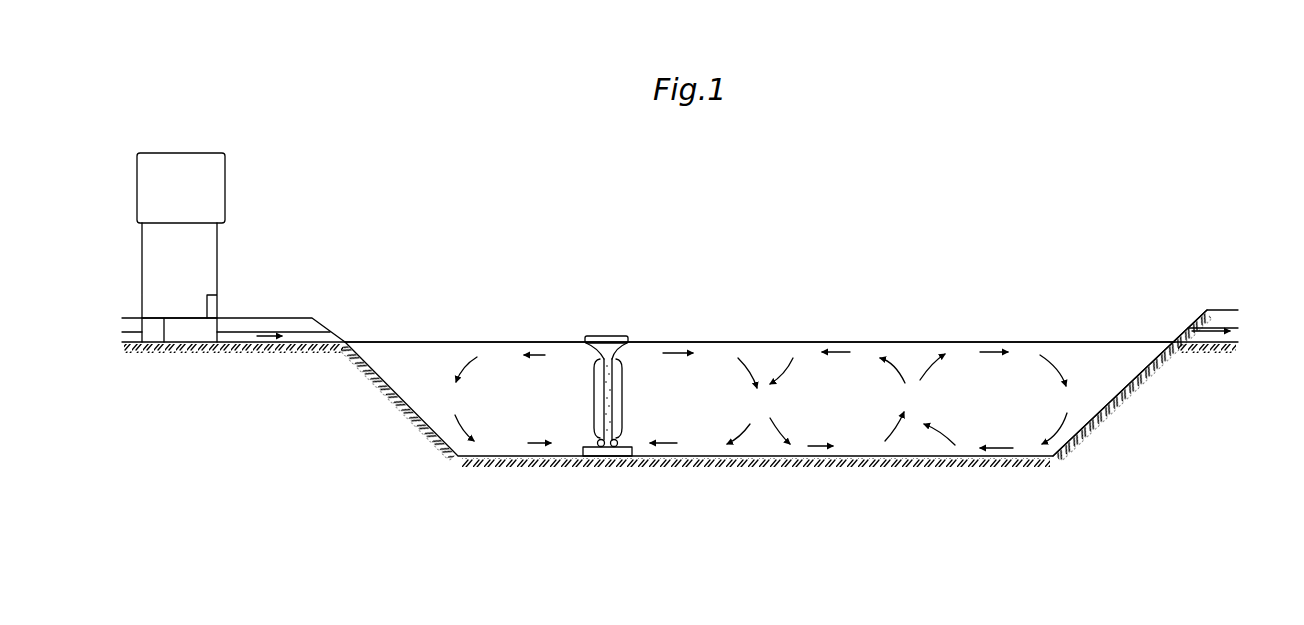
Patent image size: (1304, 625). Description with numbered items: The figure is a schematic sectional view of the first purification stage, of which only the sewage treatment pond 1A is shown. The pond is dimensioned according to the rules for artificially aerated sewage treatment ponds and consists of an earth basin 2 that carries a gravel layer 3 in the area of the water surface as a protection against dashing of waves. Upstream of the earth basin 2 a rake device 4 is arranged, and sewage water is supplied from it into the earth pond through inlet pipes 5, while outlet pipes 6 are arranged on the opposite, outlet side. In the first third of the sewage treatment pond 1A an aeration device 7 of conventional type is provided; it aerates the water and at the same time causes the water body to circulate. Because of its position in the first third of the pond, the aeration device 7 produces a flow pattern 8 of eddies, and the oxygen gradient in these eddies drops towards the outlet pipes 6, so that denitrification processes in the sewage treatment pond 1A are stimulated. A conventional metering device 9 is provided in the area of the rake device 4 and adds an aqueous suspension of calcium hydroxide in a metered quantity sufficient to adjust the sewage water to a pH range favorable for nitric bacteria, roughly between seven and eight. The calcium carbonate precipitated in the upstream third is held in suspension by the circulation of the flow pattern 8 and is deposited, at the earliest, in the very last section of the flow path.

The sewage treatment pond 1A is at (968, 292).
The earth basin 2 is at (1110, 396).
The gravel layer 3 is at (372, 392).
The rake device 4 is at (183, 329).
The inlet pipes 5 is at (280, 336).
The outlet pipes 6 is at (1224, 330).
The aeration device 7 is at (613, 322).
The flow pattern 8 is at (1000, 410).
The metering device 9 is at (204, 178).